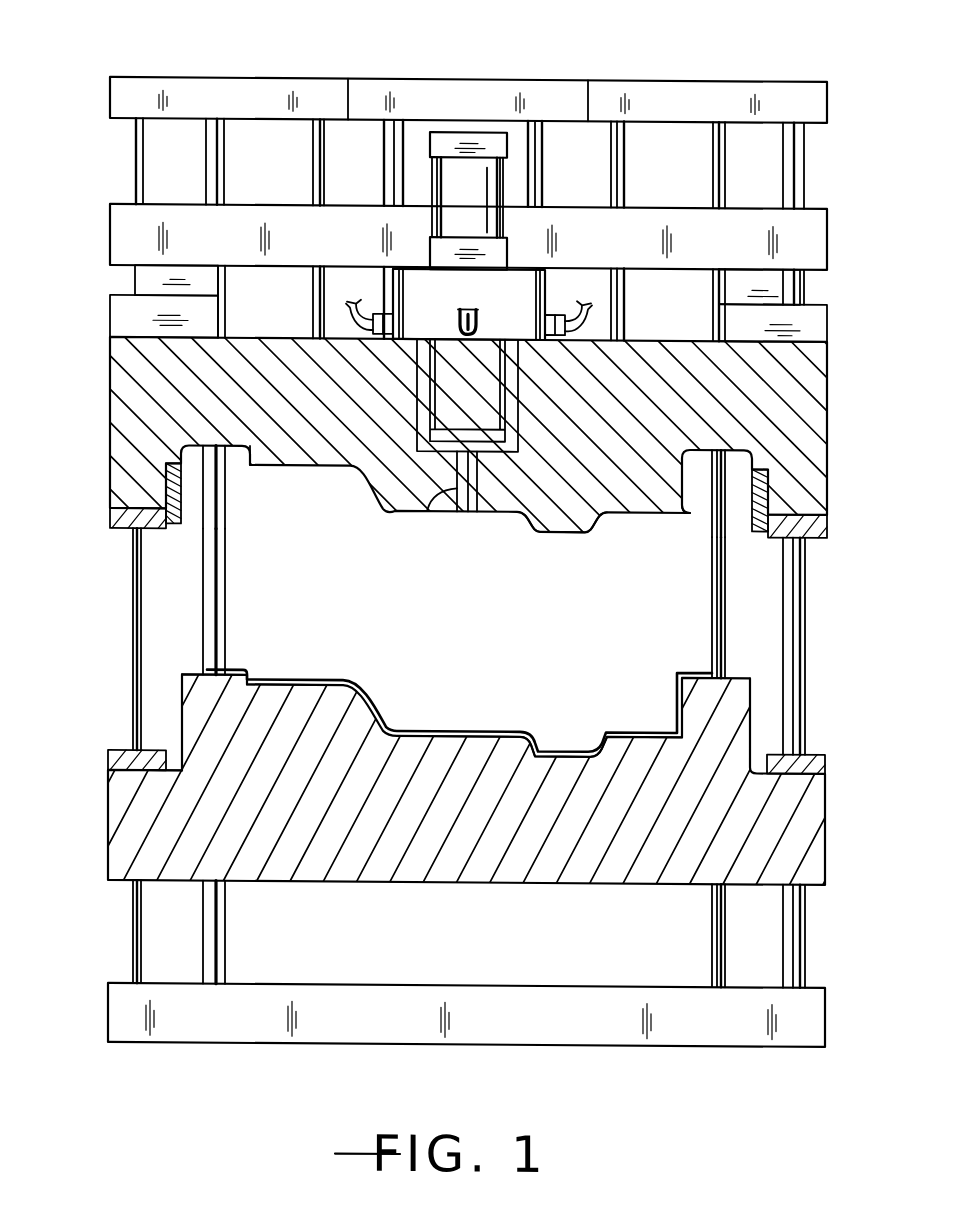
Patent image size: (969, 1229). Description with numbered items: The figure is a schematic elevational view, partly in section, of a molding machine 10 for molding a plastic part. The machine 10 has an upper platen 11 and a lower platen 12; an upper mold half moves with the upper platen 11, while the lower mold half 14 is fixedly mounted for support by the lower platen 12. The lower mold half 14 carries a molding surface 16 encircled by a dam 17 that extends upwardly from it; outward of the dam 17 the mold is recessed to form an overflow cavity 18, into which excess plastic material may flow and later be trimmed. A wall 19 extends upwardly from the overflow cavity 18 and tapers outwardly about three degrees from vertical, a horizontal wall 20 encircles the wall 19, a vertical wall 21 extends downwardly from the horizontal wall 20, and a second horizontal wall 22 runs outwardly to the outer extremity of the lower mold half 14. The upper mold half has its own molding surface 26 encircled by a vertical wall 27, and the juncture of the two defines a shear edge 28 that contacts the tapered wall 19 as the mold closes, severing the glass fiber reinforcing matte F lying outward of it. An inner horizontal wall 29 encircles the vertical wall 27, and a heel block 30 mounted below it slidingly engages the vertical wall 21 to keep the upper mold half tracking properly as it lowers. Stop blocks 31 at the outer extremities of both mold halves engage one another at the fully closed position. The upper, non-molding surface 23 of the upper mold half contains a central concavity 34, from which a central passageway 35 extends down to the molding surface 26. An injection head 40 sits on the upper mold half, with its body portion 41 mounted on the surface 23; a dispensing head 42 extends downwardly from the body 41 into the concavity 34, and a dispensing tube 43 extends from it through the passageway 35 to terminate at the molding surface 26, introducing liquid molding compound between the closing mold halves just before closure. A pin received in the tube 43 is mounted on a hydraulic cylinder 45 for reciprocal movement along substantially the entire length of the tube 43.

The molding machine 10 is at (732, 62).
The upper platen 11 is at (812, 226).
The lower platen 12 is at (713, 1017).
The lower mold half 14 is at (795, 810).
The molding surface 16 is at (420, 738).
The dam 17 is at (264, 685).
The overflow cavity 18 is at (248, 684).
The wall 19 is at (232, 679).
The horizontal wall 20 is at (194, 671).
The vertical wall 21 is at (181, 699).
The second horizontal wall 22 is at (130, 773).
The upper non-molding surface 23 is at (796, 365).
The molding surface 26 is at (553, 536).
The vertical wall 27 is at (247, 452).
The shear edge 28 is at (250, 454).
The inner horizontal wall 29 is at (198, 444).
The heel block 30 is at (164, 482).
The stop blocks 31 is at (108, 529).
The central concavity 34 is at (518, 390).
The central passageway 35 is at (415, 510).
The injection head 40 is at (513, 136).
The body portion 41 is at (512, 290).
The dispensing head 42 is at (478, 395).
The dispensing tube 43 is at (465, 510).
The hydraulic cylinder 45 is at (462, 170).
The glass fiber reinforcing matte F is at (376, 686).